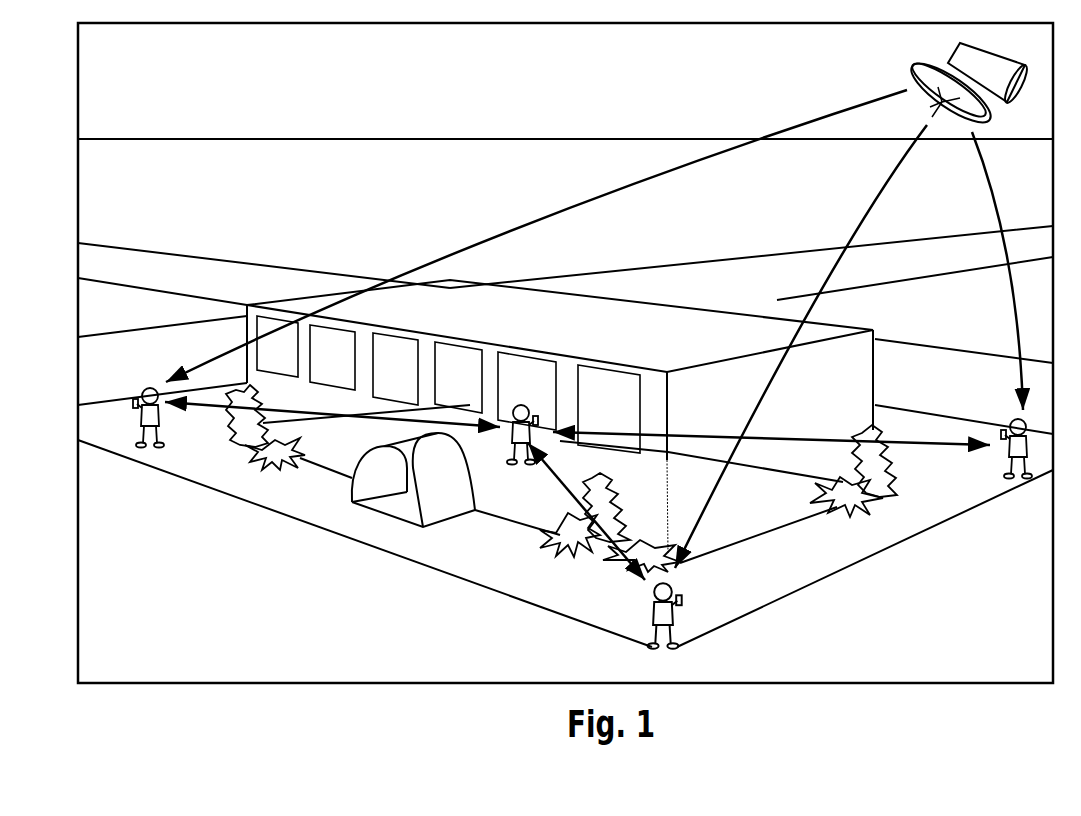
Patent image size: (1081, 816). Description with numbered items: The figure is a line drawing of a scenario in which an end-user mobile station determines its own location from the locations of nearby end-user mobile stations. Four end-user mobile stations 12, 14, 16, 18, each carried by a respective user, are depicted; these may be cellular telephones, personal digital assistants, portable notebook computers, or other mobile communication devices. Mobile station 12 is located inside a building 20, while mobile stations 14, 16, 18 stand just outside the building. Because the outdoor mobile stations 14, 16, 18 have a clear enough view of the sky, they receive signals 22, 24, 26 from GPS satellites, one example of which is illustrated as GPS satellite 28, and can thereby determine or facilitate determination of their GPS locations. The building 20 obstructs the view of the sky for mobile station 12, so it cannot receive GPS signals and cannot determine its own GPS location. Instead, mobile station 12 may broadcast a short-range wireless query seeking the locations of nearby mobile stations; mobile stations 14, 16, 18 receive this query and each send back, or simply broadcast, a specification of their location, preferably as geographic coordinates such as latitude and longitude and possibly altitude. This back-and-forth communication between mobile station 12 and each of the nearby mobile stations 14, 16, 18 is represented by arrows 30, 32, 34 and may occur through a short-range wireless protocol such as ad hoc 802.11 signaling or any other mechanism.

The end-user mobile station 12 is at (529, 409).
The end-user mobile station 14 is at (135, 390).
The end-user mobile station 16 is at (685, 590).
The end-user mobile station 18 is at (998, 415).
The building 20 is at (604, 297).
The GPS signal 22 is at (565, 208).
The GPS signal 24 is at (862, 212).
The GPS signal 26 is at (1010, 306).
The GPS satellite 28 is at (1003, 56).
The arrow 30 is at (377, 420).
The arrow 32 is at (568, 490).
The arrow 34 is at (806, 432).